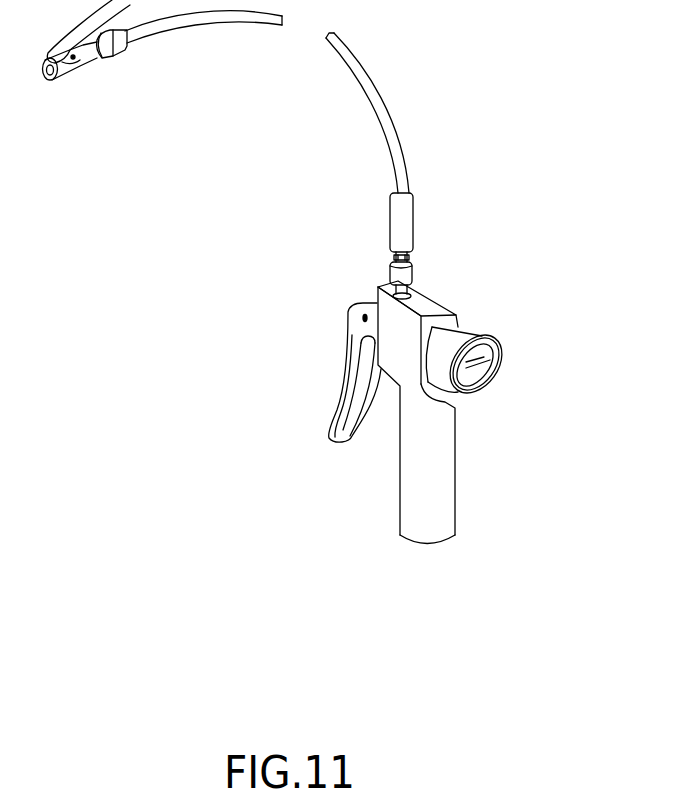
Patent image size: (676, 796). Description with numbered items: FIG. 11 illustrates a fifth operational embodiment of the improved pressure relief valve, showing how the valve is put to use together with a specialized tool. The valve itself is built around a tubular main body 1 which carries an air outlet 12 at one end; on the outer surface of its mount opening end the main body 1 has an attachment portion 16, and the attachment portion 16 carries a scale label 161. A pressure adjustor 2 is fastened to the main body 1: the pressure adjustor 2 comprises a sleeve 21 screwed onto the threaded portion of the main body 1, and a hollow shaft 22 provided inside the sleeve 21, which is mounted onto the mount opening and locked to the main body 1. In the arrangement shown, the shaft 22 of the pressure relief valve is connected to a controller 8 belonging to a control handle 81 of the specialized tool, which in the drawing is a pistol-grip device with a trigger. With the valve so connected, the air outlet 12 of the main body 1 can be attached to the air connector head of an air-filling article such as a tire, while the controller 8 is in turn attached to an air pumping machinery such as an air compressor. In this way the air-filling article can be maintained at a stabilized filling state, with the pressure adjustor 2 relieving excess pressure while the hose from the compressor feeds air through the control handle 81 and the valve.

The main body 1 is at (415, 222).
The air outlet 12 is at (406, 183).
The attachment portion 16 is at (394, 256).
The scale label 161 is at (413, 279).
The pressure adjustor 2 is at (388, 277).
The sleeve 21 is at (390, 273).
The hollow shaft 22 is at (438, 306).
The controller 8 is at (400, 465).
The control handle 81 is at (346, 388).